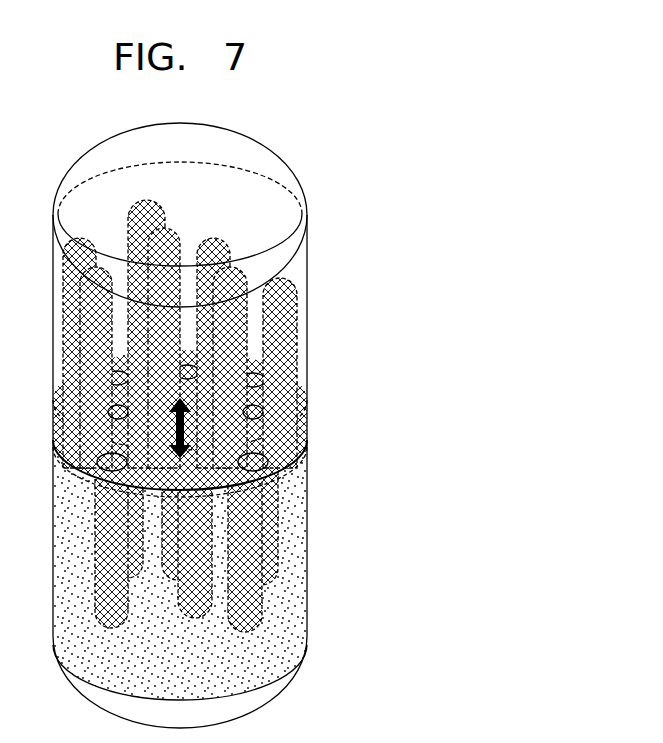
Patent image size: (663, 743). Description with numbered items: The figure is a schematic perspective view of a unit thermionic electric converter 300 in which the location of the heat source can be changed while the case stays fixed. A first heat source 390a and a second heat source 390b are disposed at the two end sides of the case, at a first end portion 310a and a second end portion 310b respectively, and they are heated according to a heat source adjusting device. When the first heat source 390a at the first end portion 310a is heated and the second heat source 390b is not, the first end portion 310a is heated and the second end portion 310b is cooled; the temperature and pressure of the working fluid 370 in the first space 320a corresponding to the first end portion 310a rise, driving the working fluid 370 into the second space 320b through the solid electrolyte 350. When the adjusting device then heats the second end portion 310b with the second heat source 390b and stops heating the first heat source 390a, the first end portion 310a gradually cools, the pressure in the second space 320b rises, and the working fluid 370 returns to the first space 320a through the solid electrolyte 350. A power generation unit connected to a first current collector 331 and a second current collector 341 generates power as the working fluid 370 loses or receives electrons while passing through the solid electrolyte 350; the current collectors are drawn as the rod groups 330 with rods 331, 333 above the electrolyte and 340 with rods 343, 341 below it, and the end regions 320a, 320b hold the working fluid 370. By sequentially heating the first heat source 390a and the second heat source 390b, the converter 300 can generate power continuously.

The unit thermionic electric converter 300 is at (479, 108).
The first heat source 390a is at (293, 178).
The first end portion 310a is at (293, 235).
The upper electrode unit 330 is at (265, 334).
The first current collector 331 is at (293, 288).
The upper front electrode rods 333 is at (293, 315).
The first space 320a is at (262, 337).
The solid electrolyte 350 is at (290, 463).
The working fluid 370 is at (298, 502).
The lower electrode unit 340 is at (281, 536).
The lower rear electrode rods 343 is at (262, 545).
The second current collector 341 is at (265, 553).
The second space 320b is at (278, 637).
The second end portion 310b is at (286, 662).
The second heat source 390b is at (287, 685).